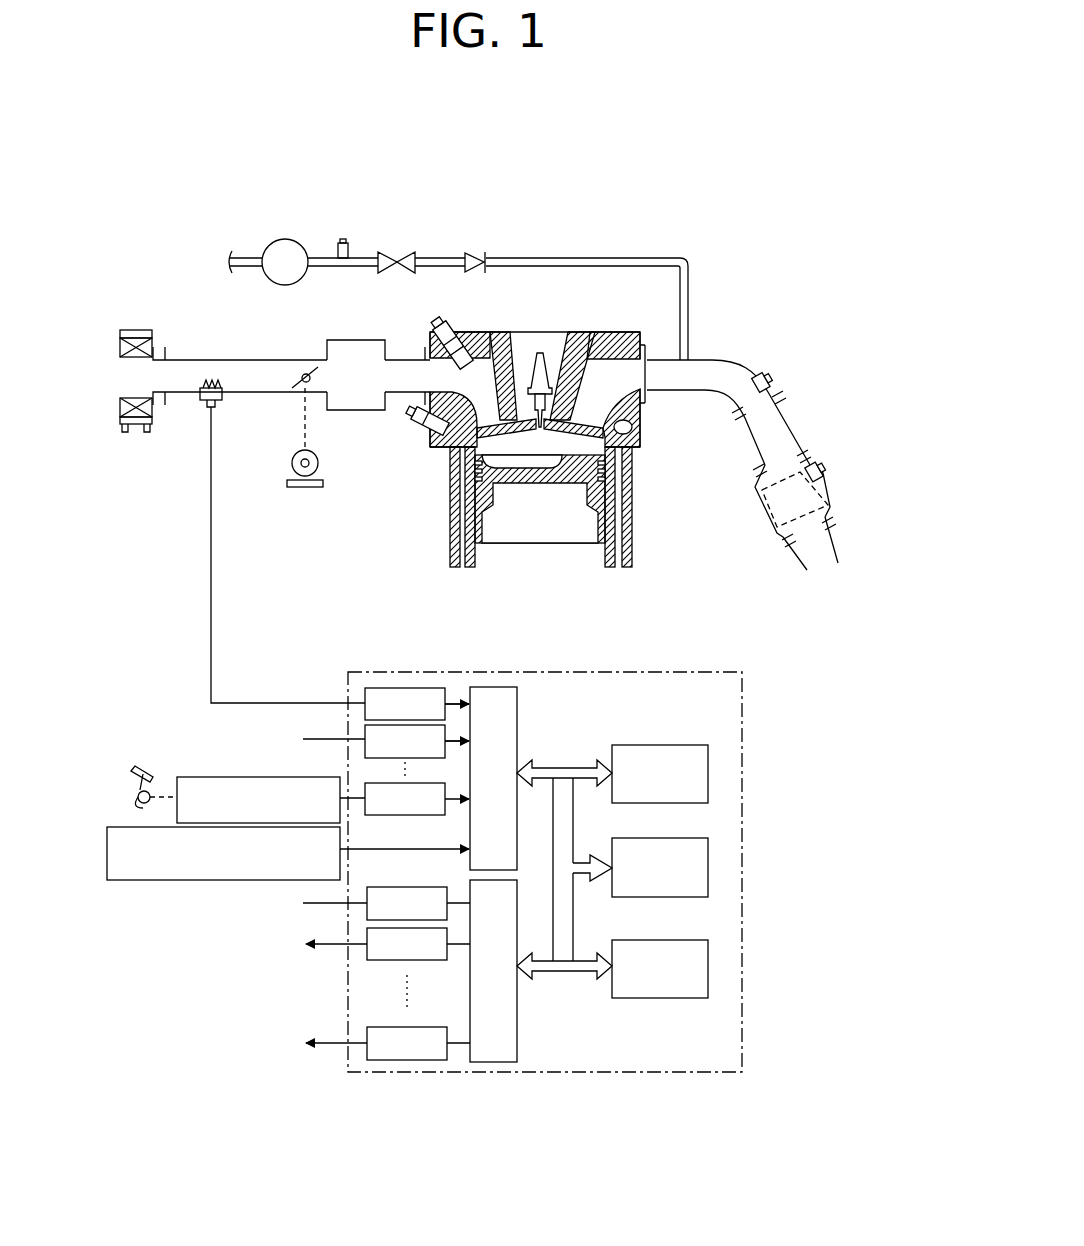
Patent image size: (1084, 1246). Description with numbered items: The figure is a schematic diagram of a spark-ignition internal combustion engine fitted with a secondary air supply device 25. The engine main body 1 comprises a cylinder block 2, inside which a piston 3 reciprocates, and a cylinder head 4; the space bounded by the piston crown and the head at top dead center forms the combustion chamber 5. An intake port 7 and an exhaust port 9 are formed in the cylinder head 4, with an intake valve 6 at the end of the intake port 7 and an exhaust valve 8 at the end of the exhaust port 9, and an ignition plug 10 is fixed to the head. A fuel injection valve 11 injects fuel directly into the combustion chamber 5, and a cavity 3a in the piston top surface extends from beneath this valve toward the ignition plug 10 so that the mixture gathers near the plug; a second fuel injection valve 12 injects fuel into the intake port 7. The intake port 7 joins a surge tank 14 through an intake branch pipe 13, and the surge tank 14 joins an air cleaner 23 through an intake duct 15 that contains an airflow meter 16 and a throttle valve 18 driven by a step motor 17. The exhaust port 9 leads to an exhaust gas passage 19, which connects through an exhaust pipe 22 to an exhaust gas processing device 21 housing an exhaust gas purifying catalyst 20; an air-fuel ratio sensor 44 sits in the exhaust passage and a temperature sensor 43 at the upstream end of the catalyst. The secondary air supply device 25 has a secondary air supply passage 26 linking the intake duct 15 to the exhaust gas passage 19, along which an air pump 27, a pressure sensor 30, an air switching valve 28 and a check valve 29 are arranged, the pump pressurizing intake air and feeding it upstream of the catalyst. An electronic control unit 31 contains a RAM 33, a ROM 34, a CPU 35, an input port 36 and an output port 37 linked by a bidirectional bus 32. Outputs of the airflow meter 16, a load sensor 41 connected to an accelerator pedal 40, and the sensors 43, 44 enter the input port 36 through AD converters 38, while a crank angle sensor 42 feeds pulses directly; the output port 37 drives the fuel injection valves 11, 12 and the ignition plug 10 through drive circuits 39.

The engine main body 1 is at (519, 429).
The cylinder block 2 is at (633, 500).
The piston 3 is at (504, 521).
The cavity 3a is at (493, 462).
The cylinder head 4 is at (612, 338).
The combustion chamber 5 is at (600, 446).
The intake valve 6 is at (500, 350).
The intake port 7 is at (440, 372).
The exhaust valve 8 is at (575, 336).
The exhaust port 9 is at (630, 372).
The ignition plug 10 is at (543, 368).
The fuel injection valve 11 is at (422, 430).
The fuel injection valve 12 is at (452, 325).
The intake branch pipe 13 is at (398, 368).
The surge tank 14 is at (360, 405).
The intake duct 15 is at (302, 358).
The airflow meter 16 is at (207, 402).
The step motor 17 is at (290, 468).
The throttle valve 18 is at (318, 385).
The exhaust gas passage 19 is at (728, 360).
The exhaust gas purifying catalyst 20 is at (828, 482).
The exhaust gas processing device 21 is at (768, 510).
The exhaust pipe 22 is at (782, 428).
The air cleaner 23 is at (138, 330).
The secondary air supply device 25 is at (585, 233).
The secondary air supply passage 26 is at (240, 256).
The air pump 27 is at (263, 250).
The air switching valve 28 is at (395, 252).
The check valve 29 is at (480, 255).
The pressure sensor 30 is at (346, 242).
The electronic control unit 31 is at (745, 762).
The bidirectional bus 32 is at (556, 768).
The RAM 33 is at (638, 838).
The ROM 34 is at (640, 745).
The CPU 35 is at (638, 940).
The input port 36 is at (518, 693).
The output port 37 is at (518, 1020).
The AD converter 38 is at (365, 745).
The drive circuit 39 is at (362, 955).
The accelerator pedal 40 is at (143, 770).
The load sensor 41 is at (210, 777).
The crank angle sensor 42 is at (185, 880).
The temperature sensor 43 is at (822, 470).
The air-fuel ratio sensor 44 is at (770, 384).